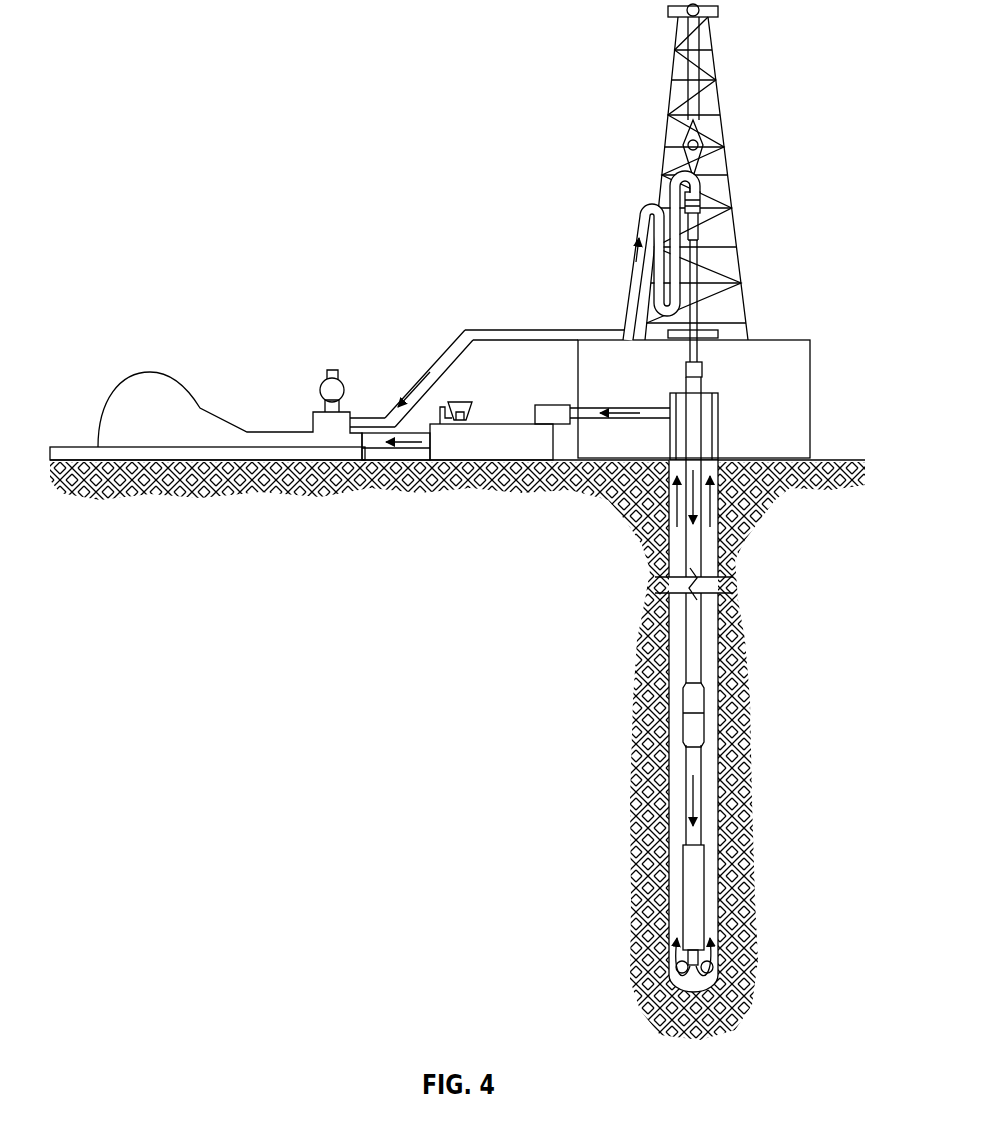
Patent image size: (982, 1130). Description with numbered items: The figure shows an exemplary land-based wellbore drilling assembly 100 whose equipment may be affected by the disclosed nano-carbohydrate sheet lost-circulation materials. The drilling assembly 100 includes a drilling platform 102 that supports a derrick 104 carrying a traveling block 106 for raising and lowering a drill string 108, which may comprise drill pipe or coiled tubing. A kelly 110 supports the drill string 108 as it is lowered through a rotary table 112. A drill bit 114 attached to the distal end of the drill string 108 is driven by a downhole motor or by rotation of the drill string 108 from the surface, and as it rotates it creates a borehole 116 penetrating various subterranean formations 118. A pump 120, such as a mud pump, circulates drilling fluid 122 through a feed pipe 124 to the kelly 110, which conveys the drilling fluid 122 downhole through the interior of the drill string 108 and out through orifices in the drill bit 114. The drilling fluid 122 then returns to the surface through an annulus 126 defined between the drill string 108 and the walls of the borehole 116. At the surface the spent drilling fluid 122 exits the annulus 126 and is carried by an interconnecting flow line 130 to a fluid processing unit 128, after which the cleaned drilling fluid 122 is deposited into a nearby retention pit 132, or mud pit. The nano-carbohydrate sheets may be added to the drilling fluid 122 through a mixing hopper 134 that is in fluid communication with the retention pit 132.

The wellbore drilling assembly 100 is at (254, 161).
The drilling platform 102 is at (810, 372).
The derrick 104 is at (721, 93).
The traveling block 106 is at (703, 138).
The drill string 108 is at (695, 534).
The kelly 110 is at (695, 255).
The rotary table 112 is at (720, 336).
The drill bit 114 is at (718, 968).
The borehole 116 is at (720, 632).
The subterranean formations 118 is at (550, 652).
The pump 120 is at (150, 371).
The drilling fluid 122 is at (383, 418).
The feed pipe 124 is at (478, 331).
The annulus 126 is at (712, 760).
The fluid processing unit 128 is at (556, 405).
The flow line 130 is at (657, 419).
The retention pit 132 is at (518, 462).
The mixing hopper 134 is at (456, 402).